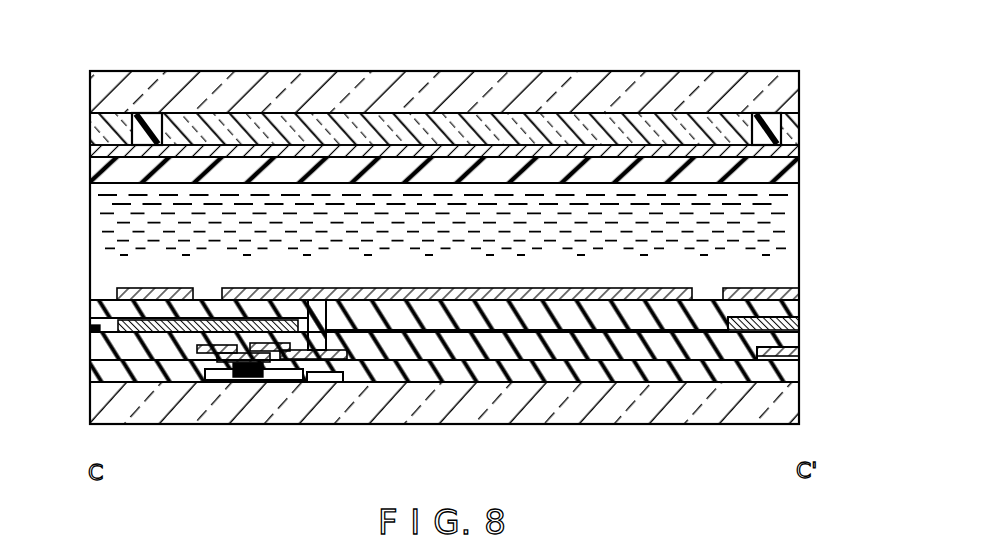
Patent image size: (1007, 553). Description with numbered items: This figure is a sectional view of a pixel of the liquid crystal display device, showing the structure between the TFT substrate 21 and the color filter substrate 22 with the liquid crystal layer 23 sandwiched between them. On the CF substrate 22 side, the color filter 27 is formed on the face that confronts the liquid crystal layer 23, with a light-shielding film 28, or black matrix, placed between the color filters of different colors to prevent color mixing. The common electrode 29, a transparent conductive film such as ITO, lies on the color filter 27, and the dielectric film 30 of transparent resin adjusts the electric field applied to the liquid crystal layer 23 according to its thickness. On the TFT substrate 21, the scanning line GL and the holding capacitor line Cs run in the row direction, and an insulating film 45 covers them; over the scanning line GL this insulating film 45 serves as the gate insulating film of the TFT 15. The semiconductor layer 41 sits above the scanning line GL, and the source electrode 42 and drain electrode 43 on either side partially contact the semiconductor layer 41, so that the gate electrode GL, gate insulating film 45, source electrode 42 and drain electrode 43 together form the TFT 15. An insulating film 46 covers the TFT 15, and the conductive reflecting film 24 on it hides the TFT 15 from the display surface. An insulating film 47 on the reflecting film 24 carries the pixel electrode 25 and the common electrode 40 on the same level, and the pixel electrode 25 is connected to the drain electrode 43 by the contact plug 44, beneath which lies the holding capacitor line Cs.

The TFT substrate 21 is at (795, 404).
The color filter substrate 22 is at (795, 93).
The liquid crystal layer 23 is at (794, 224).
The reflecting film 24 is at (795, 322).
The pixel electrode 25 is at (658, 293).
The color filter 27 is at (685, 128).
The light-shielding film 28 is at (782, 125).
The common electrode 29 is at (795, 150).
The dielectric film 30 is at (795, 173).
The common electrode 40 is at (795, 293).
The semiconductor layer 41 is at (243, 365).
The source electrode 42 is at (795, 352).
The drain electrode 43 is at (337, 354).
The contact plug 44 is at (330, 322).
The insulating film 45 is at (795, 373).
The insulating film 46 is at (743, 348).
The insulating film 47 is at (660, 320).
The TFT 15 is at (258, 376).
The scanning line GL is at (222, 378).
The holding capacitor line Cs is at (333, 378).